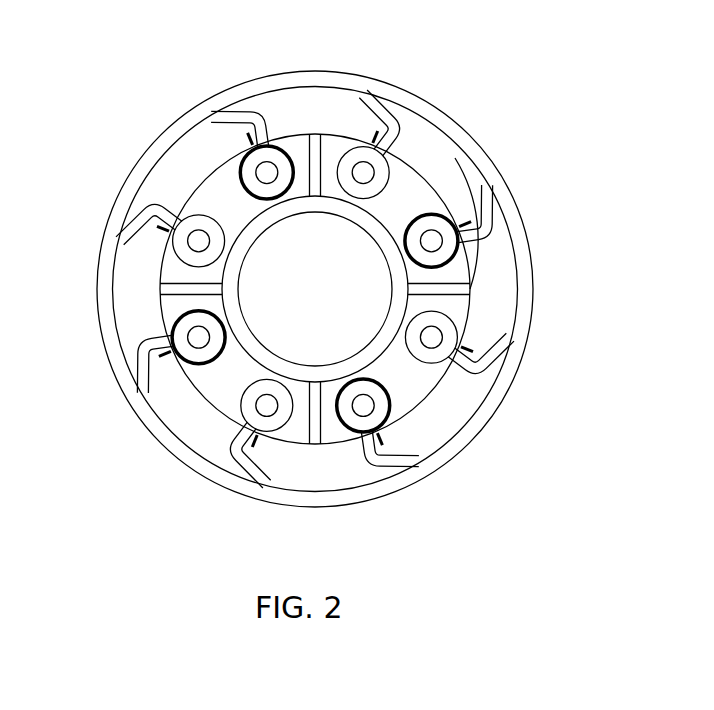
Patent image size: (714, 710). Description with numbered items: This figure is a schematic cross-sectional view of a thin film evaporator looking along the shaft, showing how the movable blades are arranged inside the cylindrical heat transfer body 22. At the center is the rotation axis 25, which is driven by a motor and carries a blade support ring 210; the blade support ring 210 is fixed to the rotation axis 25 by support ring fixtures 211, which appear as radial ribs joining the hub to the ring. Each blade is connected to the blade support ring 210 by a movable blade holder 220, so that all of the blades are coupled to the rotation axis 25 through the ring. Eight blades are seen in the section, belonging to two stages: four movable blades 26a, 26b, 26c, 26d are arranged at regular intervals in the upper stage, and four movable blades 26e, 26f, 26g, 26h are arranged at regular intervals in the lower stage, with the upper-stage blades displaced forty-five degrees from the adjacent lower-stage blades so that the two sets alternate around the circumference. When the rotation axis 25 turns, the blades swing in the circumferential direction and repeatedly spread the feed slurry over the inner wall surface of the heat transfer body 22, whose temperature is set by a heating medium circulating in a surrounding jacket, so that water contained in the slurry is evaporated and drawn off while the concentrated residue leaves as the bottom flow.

The heat transfer body 22 is at (352, 72).
The rotation axis 25 is at (267, 232).
The blade support ring 210 is at (428, 184).
The support ring fixture 211 is at (446, 299).
The movable blade holder 220 is at (467, 272).
The movable blade 26a is at (261, 113).
The movable blade 26b is at (138, 360).
The movable blade 26c is at (384, 470).
The movable blade 26d is at (492, 227).
The movable blade 26e is at (138, 221).
The movable blade 26f is at (238, 474).
The movable blade 26g is at (490, 356).
The movable blade 26h is at (389, 104).